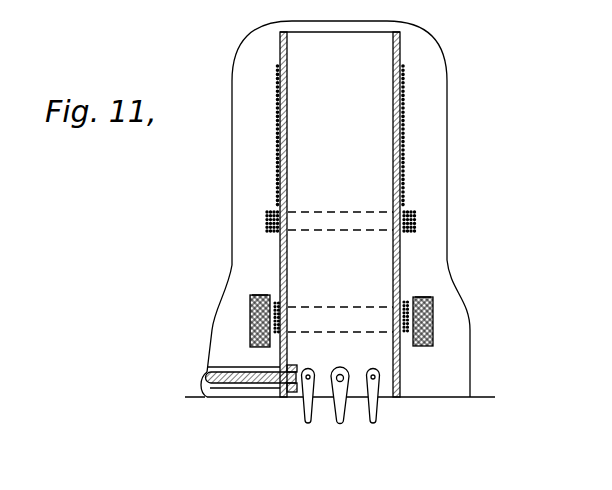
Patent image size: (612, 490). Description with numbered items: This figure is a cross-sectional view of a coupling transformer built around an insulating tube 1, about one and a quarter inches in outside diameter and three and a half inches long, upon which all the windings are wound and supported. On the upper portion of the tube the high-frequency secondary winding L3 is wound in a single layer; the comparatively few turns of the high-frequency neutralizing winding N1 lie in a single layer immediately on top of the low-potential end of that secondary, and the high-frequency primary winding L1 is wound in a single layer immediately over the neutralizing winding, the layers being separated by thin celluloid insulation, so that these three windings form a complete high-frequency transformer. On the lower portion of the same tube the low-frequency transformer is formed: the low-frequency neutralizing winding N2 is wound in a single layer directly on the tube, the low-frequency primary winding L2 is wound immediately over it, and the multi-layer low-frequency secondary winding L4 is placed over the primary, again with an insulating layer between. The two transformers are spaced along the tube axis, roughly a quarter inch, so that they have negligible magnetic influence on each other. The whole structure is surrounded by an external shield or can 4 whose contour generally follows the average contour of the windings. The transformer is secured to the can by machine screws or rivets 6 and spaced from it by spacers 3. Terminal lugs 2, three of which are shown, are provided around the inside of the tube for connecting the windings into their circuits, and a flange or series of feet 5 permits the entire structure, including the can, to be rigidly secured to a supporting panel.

The insulating tube 1 is at (287, 50).
The terminal lugs 2 is at (308, 422).
The spacers 3 is at (240, 389).
The external shield or can 4 is at (451, 261).
The flange or feet 5 is at (185, 396).
The machine screws or rivets 6 is at (206, 368).
The high-frequency primary winding L1 is at (267, 214).
The low-frequency primary winding L2 is at (258, 293).
The high-frequency secondary winding L3 is at (279, 68).
The low-frequency secondary winding L4 is at (252, 327).
The high-frequency neutralizing winding N1 is at (268, 236).
The low-frequency neutralizing winding N2 is at (280, 300).